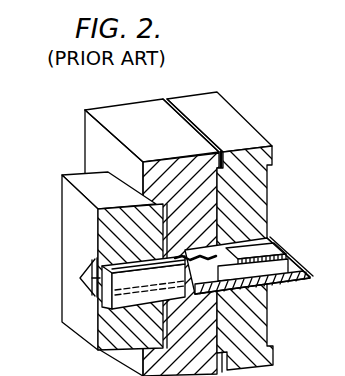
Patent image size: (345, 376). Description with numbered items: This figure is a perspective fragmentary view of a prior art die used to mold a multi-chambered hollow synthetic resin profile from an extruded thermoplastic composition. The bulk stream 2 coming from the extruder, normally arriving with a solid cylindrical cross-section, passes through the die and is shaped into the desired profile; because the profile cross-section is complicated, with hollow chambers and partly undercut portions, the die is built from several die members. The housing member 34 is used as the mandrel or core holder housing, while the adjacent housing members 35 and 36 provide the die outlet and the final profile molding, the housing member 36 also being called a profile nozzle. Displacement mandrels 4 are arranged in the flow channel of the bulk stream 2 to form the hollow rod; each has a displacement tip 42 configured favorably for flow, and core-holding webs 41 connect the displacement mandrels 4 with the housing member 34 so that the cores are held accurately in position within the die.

The bulk stream 2 is at (296, 248).
The displacement mandrel 4 is at (88, 267).
The housing member 34 is at (203, 101).
The housing member 35 is at (131, 109).
The housing member 36 is at (82, 178).
The core-holding web 41 is at (288, 262).
The displacement tip 42 is at (307, 279).